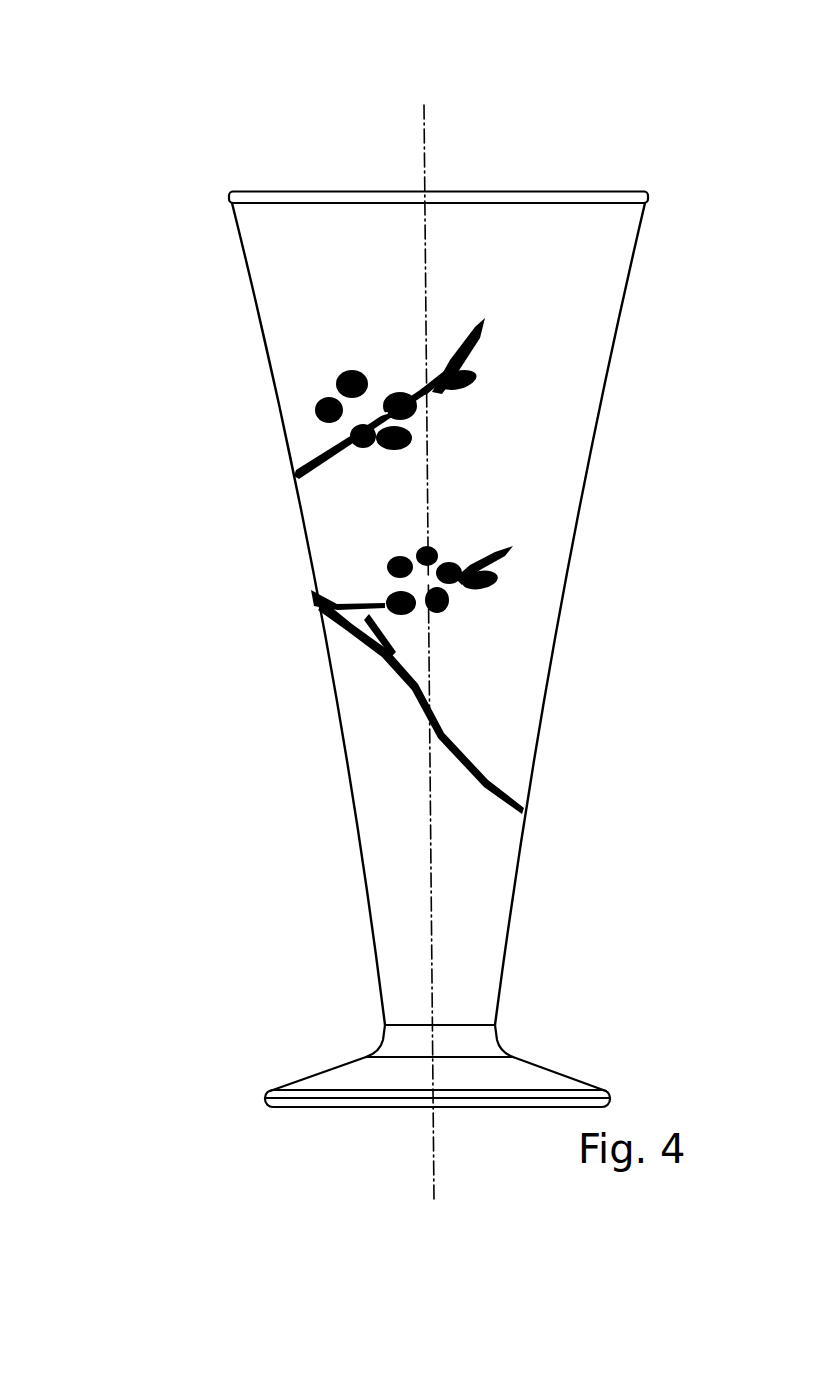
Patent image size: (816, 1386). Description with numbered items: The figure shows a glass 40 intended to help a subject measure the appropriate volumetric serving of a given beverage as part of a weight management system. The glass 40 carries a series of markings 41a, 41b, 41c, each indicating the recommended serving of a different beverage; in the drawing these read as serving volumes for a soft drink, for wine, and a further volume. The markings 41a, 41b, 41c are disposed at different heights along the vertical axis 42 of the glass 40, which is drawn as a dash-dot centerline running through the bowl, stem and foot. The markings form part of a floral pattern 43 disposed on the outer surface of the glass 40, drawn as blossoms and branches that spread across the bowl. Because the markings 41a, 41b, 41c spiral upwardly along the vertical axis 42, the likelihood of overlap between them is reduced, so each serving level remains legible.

The glass 40 is at (200, 282).
The marking 41a is at (298, 488).
The marking 41b is at (533, 630).
The marking 41c is at (535, 720).
The vertical axis 42 is at (422, 142).
The decorative floral pattern 43 is at (317, 408).